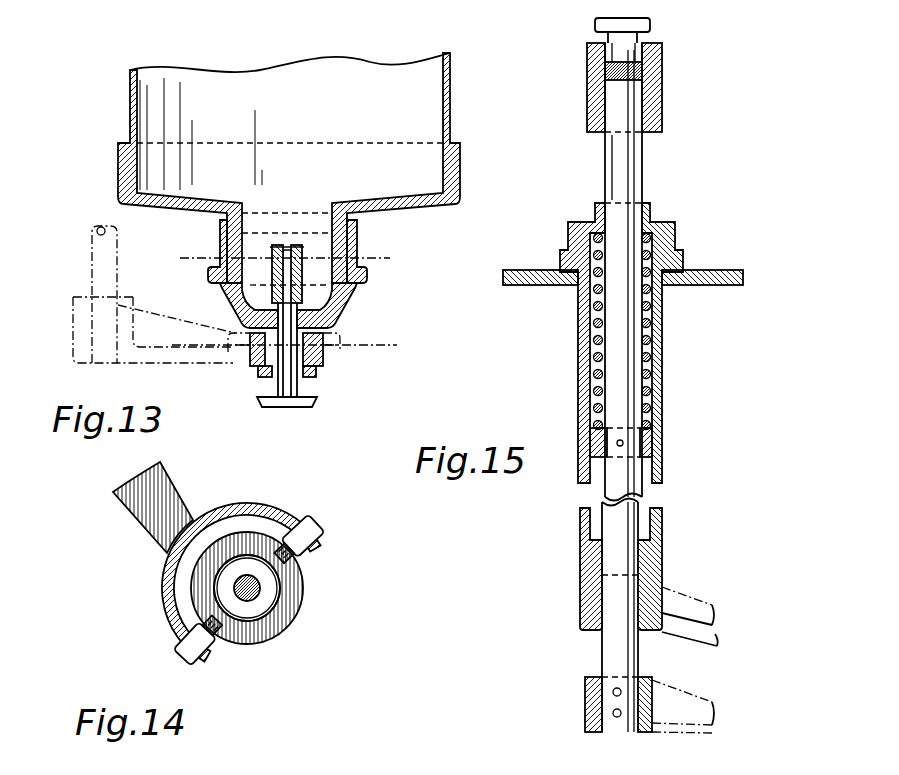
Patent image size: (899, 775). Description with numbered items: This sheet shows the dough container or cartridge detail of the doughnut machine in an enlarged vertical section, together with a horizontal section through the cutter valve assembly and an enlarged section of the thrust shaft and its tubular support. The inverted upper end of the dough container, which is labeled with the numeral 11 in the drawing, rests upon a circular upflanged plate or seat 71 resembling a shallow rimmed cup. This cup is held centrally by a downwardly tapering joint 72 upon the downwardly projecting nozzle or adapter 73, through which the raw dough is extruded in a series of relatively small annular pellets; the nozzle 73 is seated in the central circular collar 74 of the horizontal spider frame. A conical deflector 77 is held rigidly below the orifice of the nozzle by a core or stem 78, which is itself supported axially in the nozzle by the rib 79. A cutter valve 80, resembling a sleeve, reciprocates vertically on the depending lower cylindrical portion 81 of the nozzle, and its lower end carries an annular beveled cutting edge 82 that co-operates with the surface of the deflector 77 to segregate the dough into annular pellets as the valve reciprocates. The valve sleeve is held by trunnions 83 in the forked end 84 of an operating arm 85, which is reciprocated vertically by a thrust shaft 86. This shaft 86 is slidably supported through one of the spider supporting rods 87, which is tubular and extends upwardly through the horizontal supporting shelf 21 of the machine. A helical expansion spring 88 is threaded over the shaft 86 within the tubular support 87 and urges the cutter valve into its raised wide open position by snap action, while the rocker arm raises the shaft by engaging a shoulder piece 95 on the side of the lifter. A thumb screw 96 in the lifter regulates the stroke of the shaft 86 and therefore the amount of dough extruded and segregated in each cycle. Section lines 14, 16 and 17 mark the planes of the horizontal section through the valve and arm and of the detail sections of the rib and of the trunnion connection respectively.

In FIG. 13, the tank 11 is at (452, 97).
In FIG. 13, the upflanged plate or seat 71 is at (427, 206).
In FIG. 13, the downwardly tapering joint 72 is at (333, 217).
In FIG. 13, the nozzle or adapter 73 is at (347, 297).
In FIG. 13, the central circular collar 74 is at (357, 268).
In FIG. 13, the conical deflector 77 is at (303, 403).
In FIG. 13, the core or stem 78 is at (300, 319).
In FIG. 14, the core or stem 78 is at (253, 595).
In FIG. 13, the rib 79 is at (327, 267).
In FIG. 13, the cutter valve 80 is at (263, 367).
In FIG. 14, the cutter valve 80 is at (200, 575).
In FIG. 13, the cylindrical portion 81 is at (323, 363).
In FIG. 14, the cylindrical portion 81 is at (262, 643).
In FIG. 13, the annular beveled cutting edge 82 is at (268, 373).
In FIG. 14, the trunnions 83 is at (290, 530).
In FIG. 14, the forked end 84 is at (243, 507).
In FIG. 13, the operating arm 85 is at (180, 363).
In FIG. 14, the operating arm 85 is at (182, 491).
In FIG. 15, the operating arm 85 is at (653, 728).
In FIG. 13, the thrust shaft 86 is at (92, 260).
In FIG. 15, the thrust shaft 86 is at (633, 182).
In FIG. 15, the tubular spider supporting rod 87 is at (663, 340).
In FIG. 15, the helical expansion spring 88 is at (595, 335).
In FIG. 15, the shoulder piece 95 is at (662, 90).
In FIG. 15, the thumb screw 96 is at (637, 25).
In FIG. 15, the horizontal supporting shelf 21 is at (730, 270).
In FIG. 13, the section line 14— 14 is at (172, 343).
In FIG. 13, the section line 16— 16 is at (180, 256).
In FIG. 14, the section line 17— 17 is at (310, 508).